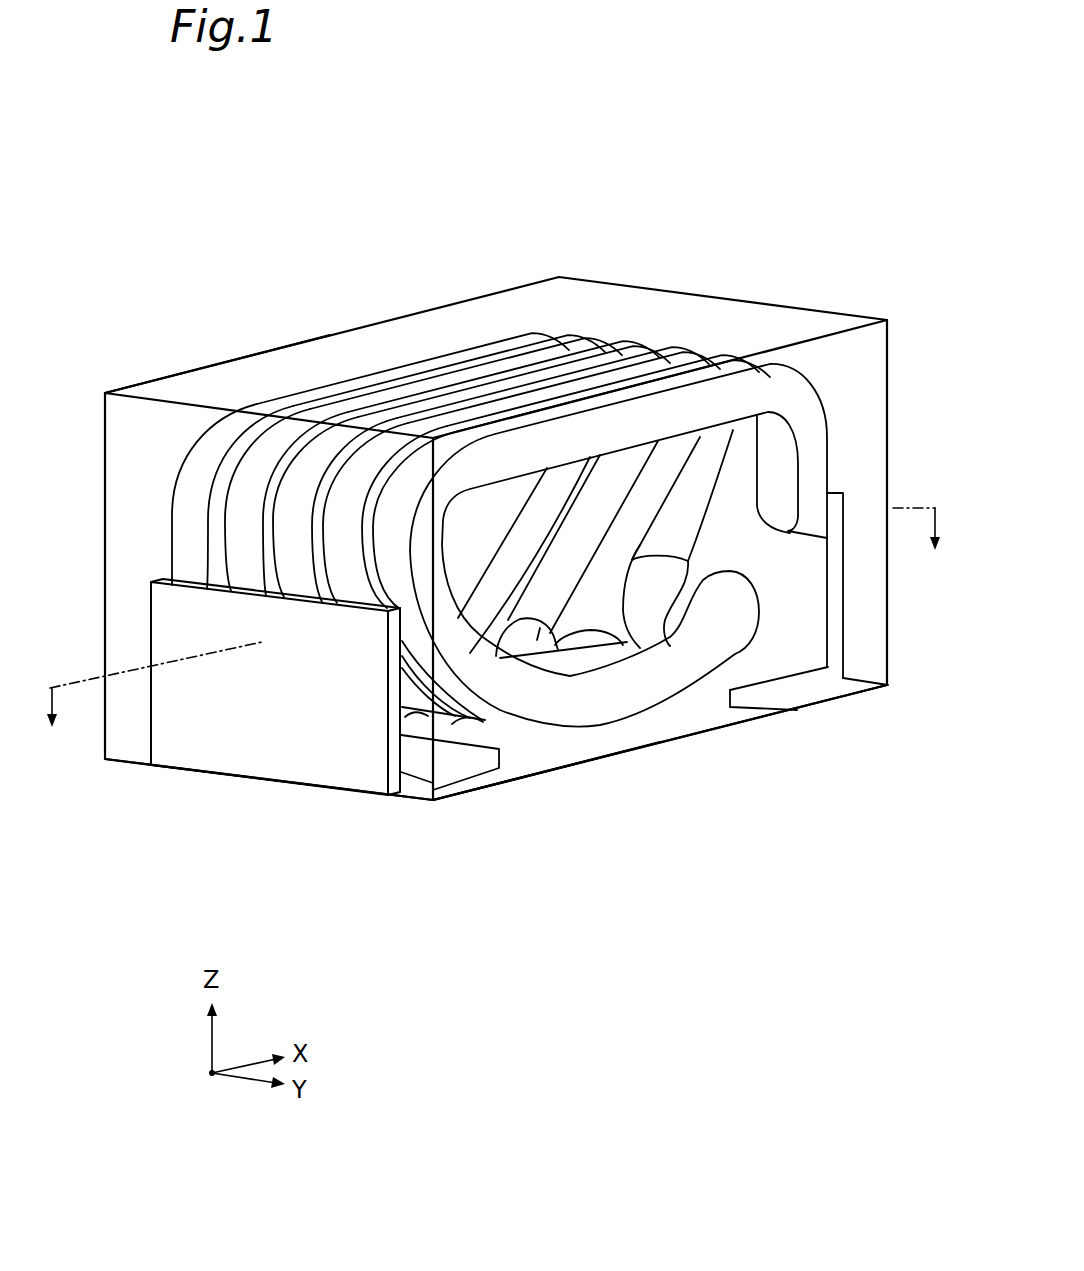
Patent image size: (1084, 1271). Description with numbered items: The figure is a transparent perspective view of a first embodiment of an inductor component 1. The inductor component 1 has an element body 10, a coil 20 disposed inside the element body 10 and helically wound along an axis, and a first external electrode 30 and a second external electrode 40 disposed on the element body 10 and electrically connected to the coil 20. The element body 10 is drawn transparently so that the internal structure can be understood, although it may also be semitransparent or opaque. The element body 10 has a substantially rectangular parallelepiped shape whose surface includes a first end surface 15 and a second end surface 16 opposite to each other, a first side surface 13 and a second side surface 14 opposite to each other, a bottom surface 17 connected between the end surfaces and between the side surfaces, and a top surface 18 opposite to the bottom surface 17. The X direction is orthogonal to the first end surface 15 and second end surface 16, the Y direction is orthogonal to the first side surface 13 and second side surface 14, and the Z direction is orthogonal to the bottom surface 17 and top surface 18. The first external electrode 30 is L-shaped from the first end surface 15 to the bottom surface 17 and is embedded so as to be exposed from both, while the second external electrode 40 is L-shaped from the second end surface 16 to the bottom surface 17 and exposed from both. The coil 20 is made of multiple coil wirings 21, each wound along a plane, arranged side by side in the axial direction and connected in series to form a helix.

The inductor component 1 is at (464, 180).
The element body 10 is at (310, 364).
The first side surface 13 is at (660, 723).
The second side surface 14 is at (232, 357).
The first end surface 15 is at (137, 472).
The second end surface 16 is at (892, 372).
The bottom surface 17 is at (590, 762).
The top surface 18 is at (368, 348).
The coil 20 is at (482, 360).
The coil wiring 21 is at (548, 352).
The first external electrode 30 is at (257, 755).
The second external electrode 40 is at (848, 606).